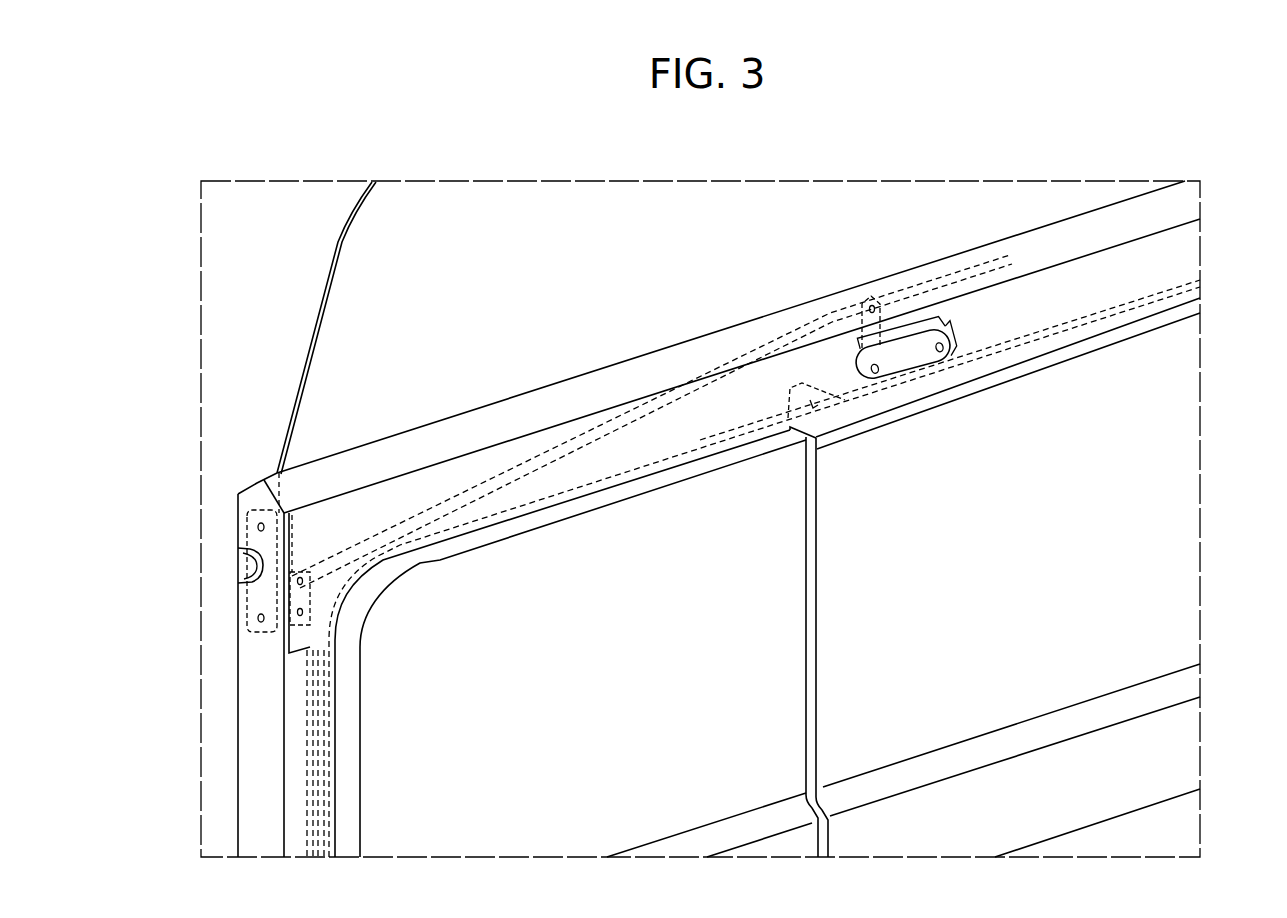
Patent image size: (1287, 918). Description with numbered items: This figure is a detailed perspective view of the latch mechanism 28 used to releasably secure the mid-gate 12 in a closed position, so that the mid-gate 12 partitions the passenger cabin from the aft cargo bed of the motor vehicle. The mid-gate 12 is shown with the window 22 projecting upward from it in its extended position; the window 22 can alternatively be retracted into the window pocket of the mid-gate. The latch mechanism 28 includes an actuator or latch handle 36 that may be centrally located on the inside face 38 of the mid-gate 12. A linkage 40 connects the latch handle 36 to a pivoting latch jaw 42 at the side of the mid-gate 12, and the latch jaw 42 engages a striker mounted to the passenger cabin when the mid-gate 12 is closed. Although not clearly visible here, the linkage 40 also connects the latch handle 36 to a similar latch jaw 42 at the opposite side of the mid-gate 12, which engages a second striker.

The mid-gate 12 is at (257, 697).
The window 22 is at (363, 322).
The latch mechanism 28 is at (758, 300).
The latch handle 36 is at (918, 358).
The inside face 38 is at (1092, 288).
The linkage 40 is at (520, 467).
The latch jaw 42 is at (238, 562).